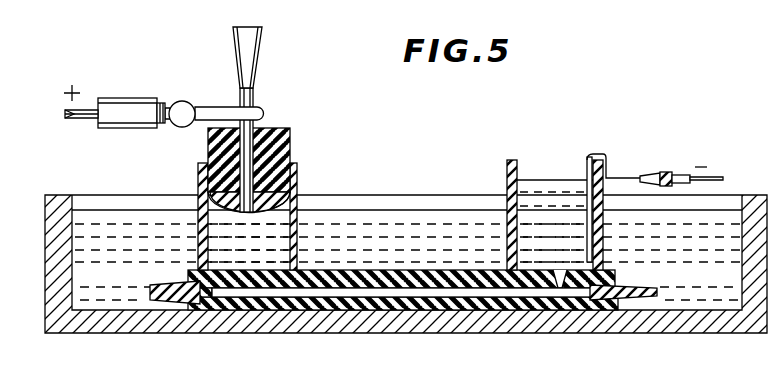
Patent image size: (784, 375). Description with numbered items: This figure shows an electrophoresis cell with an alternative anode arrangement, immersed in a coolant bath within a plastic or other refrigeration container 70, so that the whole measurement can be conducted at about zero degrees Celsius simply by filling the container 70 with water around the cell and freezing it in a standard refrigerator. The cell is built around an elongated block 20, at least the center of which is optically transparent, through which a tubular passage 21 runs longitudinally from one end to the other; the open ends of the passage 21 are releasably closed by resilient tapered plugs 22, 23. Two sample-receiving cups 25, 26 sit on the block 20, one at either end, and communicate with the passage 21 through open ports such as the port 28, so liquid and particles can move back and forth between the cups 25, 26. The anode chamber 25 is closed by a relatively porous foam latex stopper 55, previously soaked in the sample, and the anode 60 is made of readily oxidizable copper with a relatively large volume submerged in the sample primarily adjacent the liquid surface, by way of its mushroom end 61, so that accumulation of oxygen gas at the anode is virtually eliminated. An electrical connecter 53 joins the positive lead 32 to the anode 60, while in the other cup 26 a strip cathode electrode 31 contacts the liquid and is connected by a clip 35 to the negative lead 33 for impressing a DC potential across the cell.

The elongated block 20 is at (425, 270).
The tubular passage 21 is at (347, 292).
The resilient tapered plug 22 is at (172, 297).
The resilient tapered plug 23 is at (648, 298).
The sample-receiving cup 25 is at (198, 178).
The sample-receiving cup 26 is at (532, 168).
The open port 28 is at (560, 280).
The electrode 31 is at (600, 157).
The conducting wire 32 is at (65, 114).
The conducting wire 33 is at (723, 178).
The clip 35 is at (670, 172).
The electrical connecter 53 is at (210, 106).
The foam latex stopper 55 is at (290, 136).
The anode 60 is at (255, 90).
The mushroom end 61 is at (298, 197).
The refrigeration container 70 is at (713, 323).